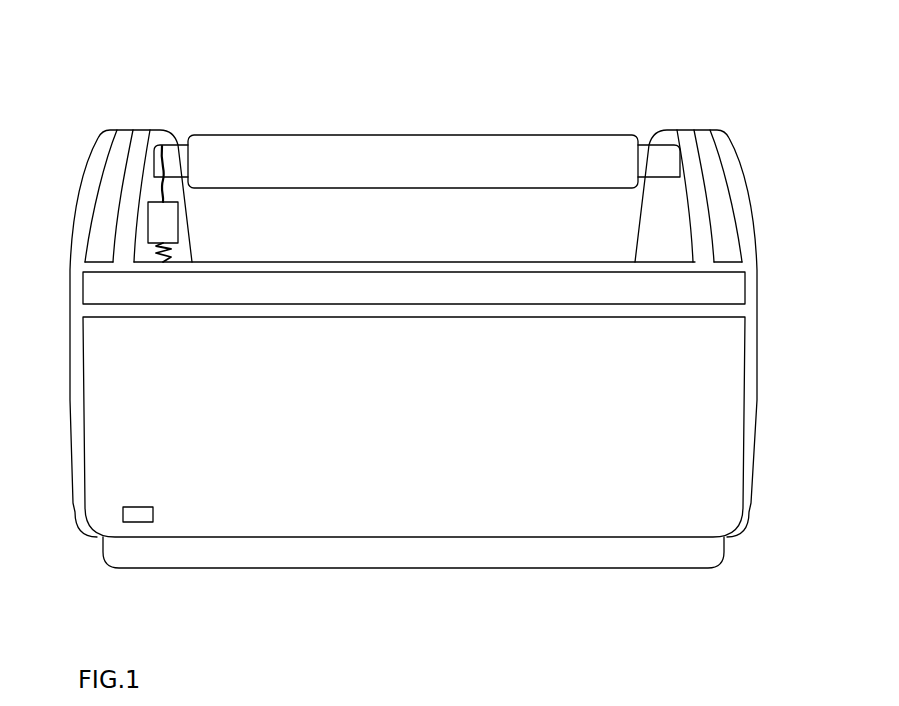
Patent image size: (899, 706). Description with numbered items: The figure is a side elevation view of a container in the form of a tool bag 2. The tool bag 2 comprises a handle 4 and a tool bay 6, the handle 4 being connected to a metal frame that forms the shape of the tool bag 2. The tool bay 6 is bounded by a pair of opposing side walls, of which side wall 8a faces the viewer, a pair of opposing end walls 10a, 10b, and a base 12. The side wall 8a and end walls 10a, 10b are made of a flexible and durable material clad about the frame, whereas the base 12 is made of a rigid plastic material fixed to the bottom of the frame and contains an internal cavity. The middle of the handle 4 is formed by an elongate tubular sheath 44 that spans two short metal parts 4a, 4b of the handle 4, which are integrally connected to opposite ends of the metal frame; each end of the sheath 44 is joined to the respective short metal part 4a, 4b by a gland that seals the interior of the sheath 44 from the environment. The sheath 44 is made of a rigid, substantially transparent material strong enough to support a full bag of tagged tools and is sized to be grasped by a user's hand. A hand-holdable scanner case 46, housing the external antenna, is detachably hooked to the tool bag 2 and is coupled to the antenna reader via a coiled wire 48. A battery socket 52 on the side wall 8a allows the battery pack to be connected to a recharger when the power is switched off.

The tool bag 2 is at (362, 585).
The handle 4 is at (143, 63).
The first short metal part 4a is at (178, 157).
The second short metal part 4b is at (655, 165).
The tool bay 6 is at (400, 240).
The side wall 8a is at (412, 422).
The end wall 10a is at (70, 412).
The end wall 10b is at (757, 395).
The base 12 is at (583, 553).
The elongate tubular sheath 44 is at (236, 135).
The hand-holdable scanner case 46 is at (162, 220).
The coiled wire 48 is at (155, 250).
The battery socket 52 is at (137, 513).